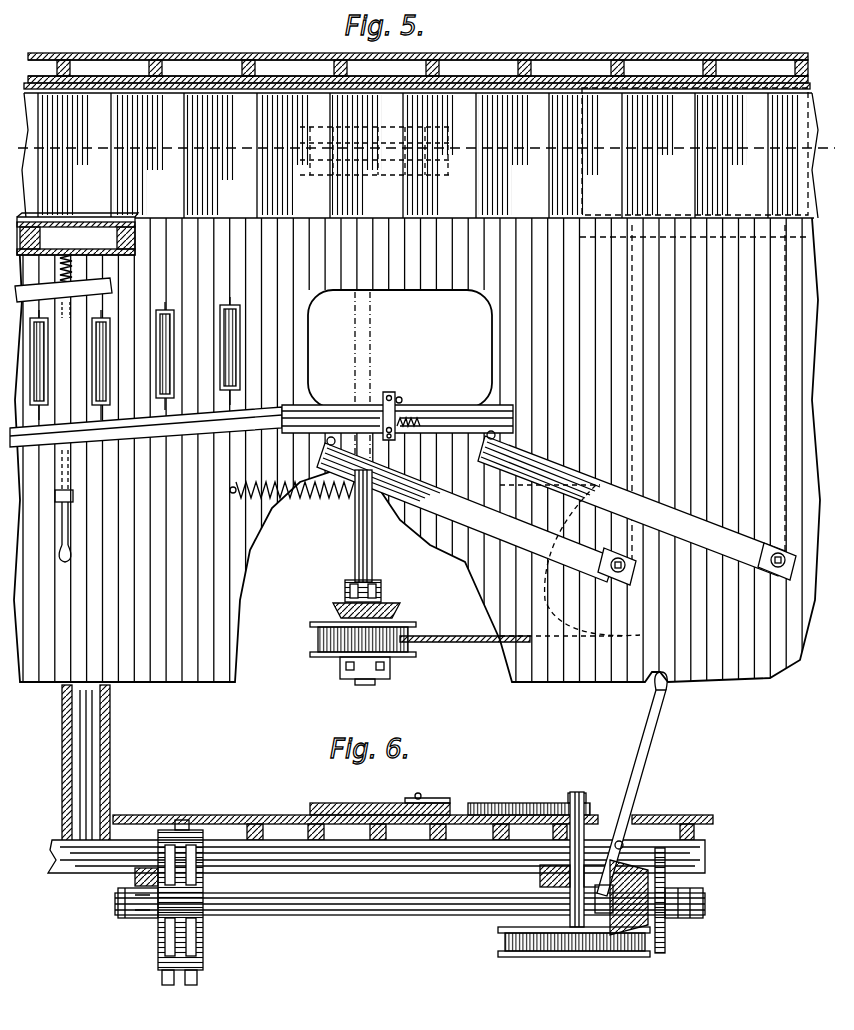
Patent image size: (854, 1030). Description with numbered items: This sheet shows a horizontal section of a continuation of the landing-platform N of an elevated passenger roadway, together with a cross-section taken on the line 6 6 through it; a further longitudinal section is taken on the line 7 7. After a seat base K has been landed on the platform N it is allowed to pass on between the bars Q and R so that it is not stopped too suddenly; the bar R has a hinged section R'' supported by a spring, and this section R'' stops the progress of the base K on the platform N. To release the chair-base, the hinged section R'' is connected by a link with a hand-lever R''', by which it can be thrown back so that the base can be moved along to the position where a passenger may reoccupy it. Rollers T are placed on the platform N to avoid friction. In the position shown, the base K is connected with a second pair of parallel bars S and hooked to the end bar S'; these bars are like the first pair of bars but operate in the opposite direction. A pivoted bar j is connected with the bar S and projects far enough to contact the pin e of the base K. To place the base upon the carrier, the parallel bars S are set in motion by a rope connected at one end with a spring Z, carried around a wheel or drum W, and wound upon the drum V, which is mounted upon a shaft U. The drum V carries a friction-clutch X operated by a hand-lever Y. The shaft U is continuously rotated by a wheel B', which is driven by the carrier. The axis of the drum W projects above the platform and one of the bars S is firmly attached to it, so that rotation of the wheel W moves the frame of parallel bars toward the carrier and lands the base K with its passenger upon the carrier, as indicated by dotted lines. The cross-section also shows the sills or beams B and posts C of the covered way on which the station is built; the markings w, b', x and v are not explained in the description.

In FIG. 5, the section line 7 7 is at (419, 159).
In FIG. 5, the section line 6 6 is at (355, 38).
In FIG. 5, the platform N is at (417, 450).
In FIG. 6, the platform N is at (413, 816).
In FIG. 5, the hinged section of bar R R'' is at (63, 298).
In FIG. 5, the rollers T is at (104, 362).
In FIG. 5, the bar Q is at (146, 427).
In FIG. 5, the base or platform of the seat K is at (400, 380).
In FIG. 6, the base or platform of the seat K is at (450, 802).
In FIG. 5, the pivoted bar j is at (383, 410).
In FIG. 5, the pin e is at (408, 404).
In FIG. 6, the pin e is at (427, 790).
In FIG. 5, the end bar S' is at (397, 419).
In FIG. 5, the parallel bars S is at (556, 508).
In FIG. 5, the spring Z is at (312, 500).
In FIG. 5, the shaft U is at (372, 526).
In FIG. 6, the shaft U is at (410, 912).
In FIG. 5, the hand-lever Y is at (382, 600).
In FIG. 6, the hand-lever Y is at (632, 784).
In FIG. 5, the friction-clutch X is at (370, 611).
In FIG. 5, the drum V is at (420, 653).
In FIG. 5, the hand-lever R''' is at (72, 506).
In FIG. 5, the path w is at (591, 560).
In FIG. 6, the posts C is at (91, 763).
In FIG. 6, the sills or beams B is at (376, 856).
In FIG. 6, the wheel B' is at (173, 895).
In FIG. 6, the foot b' is at (188, 987).
In FIG. 6, the bevel gear x is at (621, 897).
In FIG. 6, the flange v is at (679, 900).
In FIG. 6, the wheel or drum W is at (574, 952).